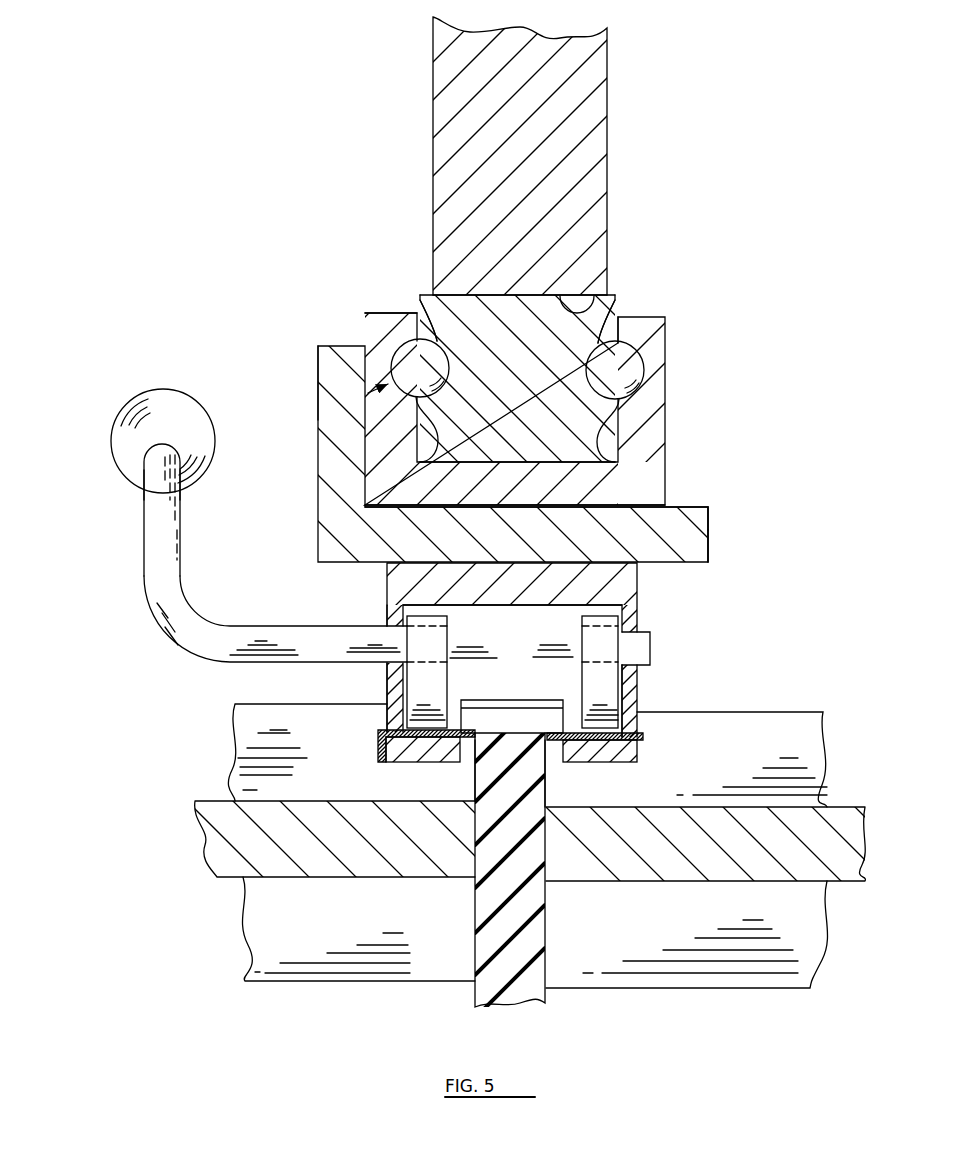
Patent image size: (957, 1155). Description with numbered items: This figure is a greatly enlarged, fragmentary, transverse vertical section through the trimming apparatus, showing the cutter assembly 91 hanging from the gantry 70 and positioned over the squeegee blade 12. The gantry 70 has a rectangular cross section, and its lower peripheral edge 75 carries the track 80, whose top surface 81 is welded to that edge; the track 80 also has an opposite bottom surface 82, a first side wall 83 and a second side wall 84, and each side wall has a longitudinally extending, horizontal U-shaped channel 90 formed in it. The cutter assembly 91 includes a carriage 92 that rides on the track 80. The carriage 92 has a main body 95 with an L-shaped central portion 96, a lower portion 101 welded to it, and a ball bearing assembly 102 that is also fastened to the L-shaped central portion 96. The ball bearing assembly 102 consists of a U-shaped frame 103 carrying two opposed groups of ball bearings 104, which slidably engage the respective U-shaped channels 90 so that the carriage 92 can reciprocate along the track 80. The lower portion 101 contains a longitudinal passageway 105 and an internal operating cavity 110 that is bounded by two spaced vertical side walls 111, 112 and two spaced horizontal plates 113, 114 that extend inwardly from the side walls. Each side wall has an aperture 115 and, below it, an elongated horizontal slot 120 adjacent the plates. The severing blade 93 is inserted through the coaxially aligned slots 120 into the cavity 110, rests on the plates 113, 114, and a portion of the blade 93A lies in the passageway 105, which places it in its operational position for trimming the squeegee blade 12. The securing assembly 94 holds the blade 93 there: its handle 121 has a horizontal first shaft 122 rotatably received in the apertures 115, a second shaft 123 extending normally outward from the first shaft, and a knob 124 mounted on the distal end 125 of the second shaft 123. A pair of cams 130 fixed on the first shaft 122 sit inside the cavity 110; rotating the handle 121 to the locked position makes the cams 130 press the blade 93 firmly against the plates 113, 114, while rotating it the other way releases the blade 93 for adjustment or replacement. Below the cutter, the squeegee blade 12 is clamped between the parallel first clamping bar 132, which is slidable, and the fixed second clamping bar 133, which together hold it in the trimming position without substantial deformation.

The squeegee blade 12 is at (495, 900).
The gantry 70 is at (567, 134).
The lower peripheral edge 75 is at (618, 295).
The track 80 is at (622, 316).
The top surface 81 is at (530, 294).
The bottom surface 82 is at (665, 483).
The first side wall 83 is at (418, 305).
The second side wall 84 is at (620, 313).
The U-shaped channel 90 is at (430, 365).
The cutter assembly 91 is at (722, 508).
The carriage 92 is at (313, 430).
The blade 93 is at (378, 746).
The portion of the blade 93A is at (555, 745).
The securing assembly 94 is at (216, 521).
The main body 95 is at (707, 500).
The L-shaped central portion 96 is at (690, 540).
The lower portion 101 is at (622, 582).
The ball bearing assembly 102 is at (318, 424).
The U-shaped frame 103 is at (650, 410).
The ball bearings 104 is at (437, 318).
The passageway 105 is at (540, 718).
The internal operating cavity 110 is at (563, 672).
The side wall 111 is at (385, 680).
The side wall 112 is at (632, 708).
The plate 113 is at (415, 747).
The plate 114 is at (630, 752).
The aperture 115 is at (390, 632).
The slot 120 is at (380, 733).
The handle 121 is at (133, 512).
The first shaft 122 is at (280, 637).
The second shaft 123 is at (157, 485).
The knob 124 is at (147, 410).
The distal end 125 is at (181, 481).
The cams 130 is at (593, 688).
The first clamping bar 132 is at (408, 857).
The second clamping bar 133 is at (703, 855).